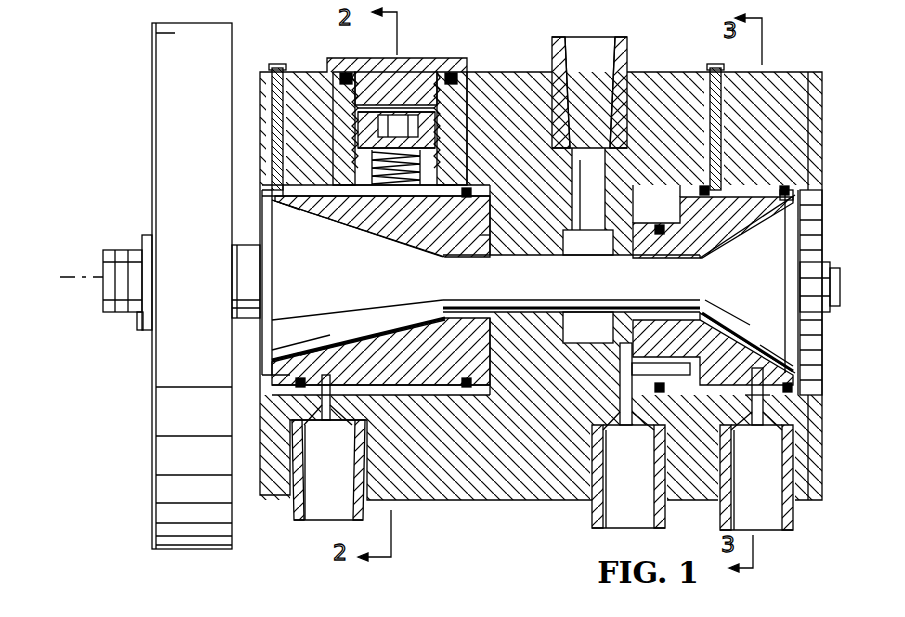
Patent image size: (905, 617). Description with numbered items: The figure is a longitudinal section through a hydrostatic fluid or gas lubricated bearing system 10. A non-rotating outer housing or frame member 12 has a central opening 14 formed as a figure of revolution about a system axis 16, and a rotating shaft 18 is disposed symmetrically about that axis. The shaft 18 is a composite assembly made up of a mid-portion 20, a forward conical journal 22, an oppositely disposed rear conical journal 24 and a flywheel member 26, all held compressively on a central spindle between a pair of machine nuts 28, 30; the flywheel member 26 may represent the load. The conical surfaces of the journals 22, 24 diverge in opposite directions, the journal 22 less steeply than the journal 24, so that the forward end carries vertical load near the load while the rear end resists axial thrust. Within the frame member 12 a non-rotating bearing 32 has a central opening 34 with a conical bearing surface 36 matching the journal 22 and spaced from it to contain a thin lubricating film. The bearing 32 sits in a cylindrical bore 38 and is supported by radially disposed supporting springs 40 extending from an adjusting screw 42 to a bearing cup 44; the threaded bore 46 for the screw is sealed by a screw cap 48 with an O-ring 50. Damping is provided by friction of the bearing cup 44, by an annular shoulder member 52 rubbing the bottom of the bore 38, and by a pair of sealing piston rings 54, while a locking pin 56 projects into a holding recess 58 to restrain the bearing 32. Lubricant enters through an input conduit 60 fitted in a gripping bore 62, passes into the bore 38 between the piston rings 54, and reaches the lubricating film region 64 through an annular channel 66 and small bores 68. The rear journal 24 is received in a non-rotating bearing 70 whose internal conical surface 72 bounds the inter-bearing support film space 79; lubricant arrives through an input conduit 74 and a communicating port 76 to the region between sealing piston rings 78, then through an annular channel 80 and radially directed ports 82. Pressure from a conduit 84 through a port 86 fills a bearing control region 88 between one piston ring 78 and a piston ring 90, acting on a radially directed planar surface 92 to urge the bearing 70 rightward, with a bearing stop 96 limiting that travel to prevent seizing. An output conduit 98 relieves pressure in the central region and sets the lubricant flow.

The fluid lubricated bearing system 10 is at (123, 56).
The outer housing or frame member 12 is at (515, 72).
The central opening 14 is at (512, 255).
The system axis 16 is at (107, 271).
The rotating shaft 18 is at (100, 295).
The mid-portion 20 is at (571, 283).
The forward conical journal 22 is at (353, 282).
The rear conical journal 24 is at (749, 292).
The flywheel member 26 is at (206, 286).
The machine nut 28 is at (130, 320).
The machine nut 30 is at (812, 325).
The non-rotating bearing 32 is at (381, 351).
The central opening 34 is at (478, 240).
The conical bearing surface 36 is at (375, 225).
The cylindrical bore 38 is at (470, 160).
The supporting springs 40 is at (378, 172).
The adjusting screw 42 is at (358, 124).
The bearing cup 44 is at (425, 178).
The threaded bore 46 is at (437, 110).
The screw cap 48 is at (332, 58).
The O-ring 50 is at (352, 92).
The annular shoulder member 52 is at (473, 194).
The sealing piston rings 54 is at (300, 388).
The locking pin 56 is at (278, 68).
The holding recess 58 is at (270, 192).
The input conduit 60 is at (294, 506).
The gripping bore 62 is at (335, 406).
The lubricating film region 64 is at (355, 346).
The annular channel 66 is at (318, 350).
The small bores 68 is at (330, 215).
The non-rotating bearing 70 is at (742, 205).
The internal conical surface 72 is at (778, 204).
The input conduit 74 is at (795, 520).
The communicating port 76 is at (750, 397).
The sealing piston rings 78 is at (703, 185).
The inter-bearing support film space 79 is at (745, 218).
The annular channel 80 is at (742, 368).
The radially directed ports 82 is at (756, 344).
The conduit 84 is at (594, 512).
The port 86 is at (620, 385).
The bearing control region 88 is at (645, 388).
The piston ring 90 is at (658, 224).
The radially directed planar surface 92 is at (668, 402).
The bearing stop 96 is at (793, 392).
The output conduit 98 is at (627, 42).